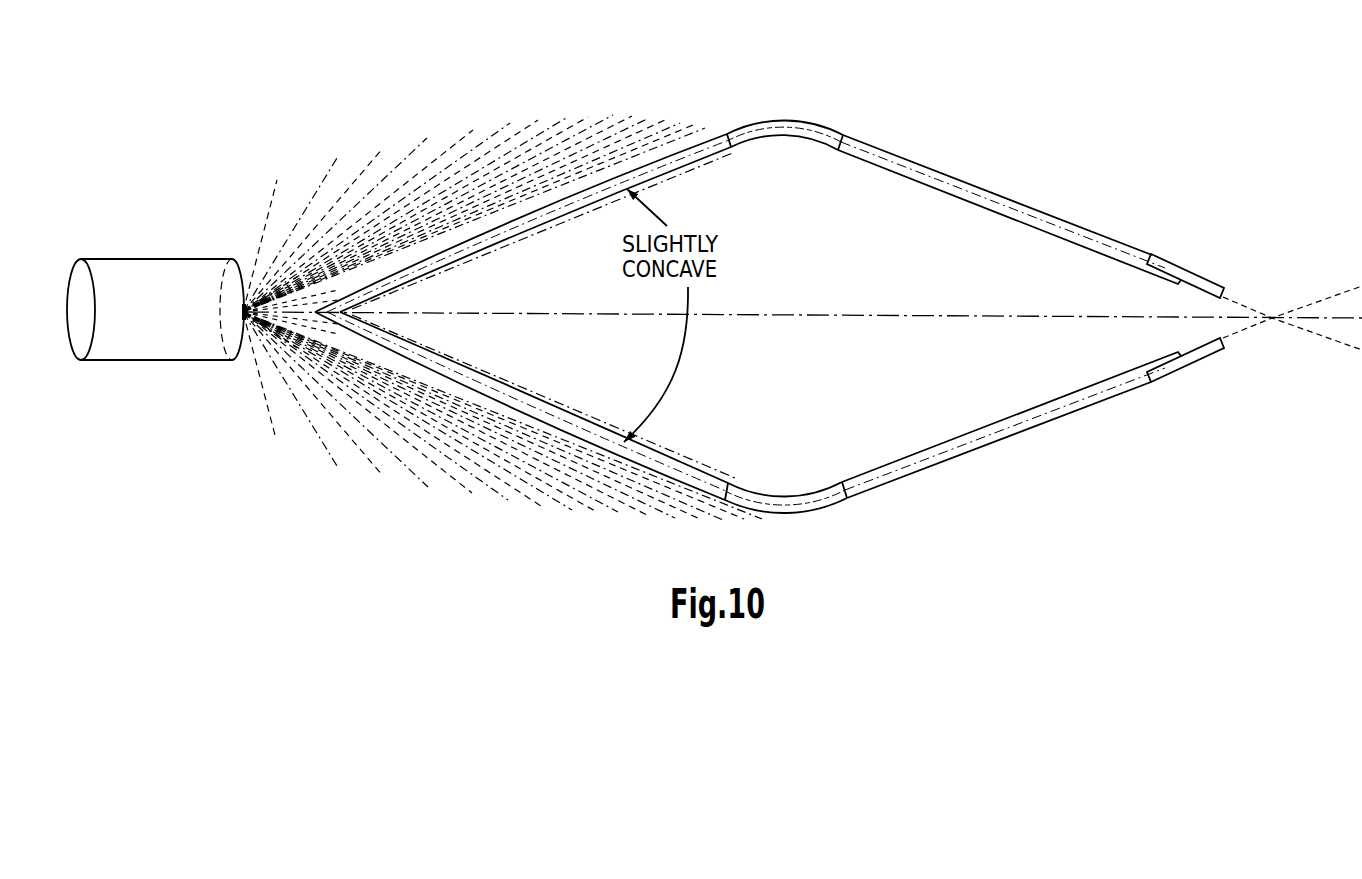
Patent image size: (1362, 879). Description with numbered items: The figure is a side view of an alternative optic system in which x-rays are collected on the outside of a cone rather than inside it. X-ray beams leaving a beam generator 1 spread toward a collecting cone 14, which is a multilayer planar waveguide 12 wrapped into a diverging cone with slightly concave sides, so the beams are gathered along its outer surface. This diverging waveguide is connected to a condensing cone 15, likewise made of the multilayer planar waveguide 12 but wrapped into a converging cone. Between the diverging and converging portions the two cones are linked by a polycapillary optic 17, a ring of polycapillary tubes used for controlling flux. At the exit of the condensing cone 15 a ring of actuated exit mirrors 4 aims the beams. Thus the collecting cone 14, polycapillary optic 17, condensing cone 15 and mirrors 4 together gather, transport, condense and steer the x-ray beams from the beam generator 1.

The beam generator 1 is at (155, 309).
The multilayer planar waveguide 12 is at (748, 270).
The collecting cone 14 is at (523, 317).
The condensing cone 15 is at (1009, 316).
The polycapillary optic 17 is at (790, 492).
The exit mirrors 4 is at (1211, 343).